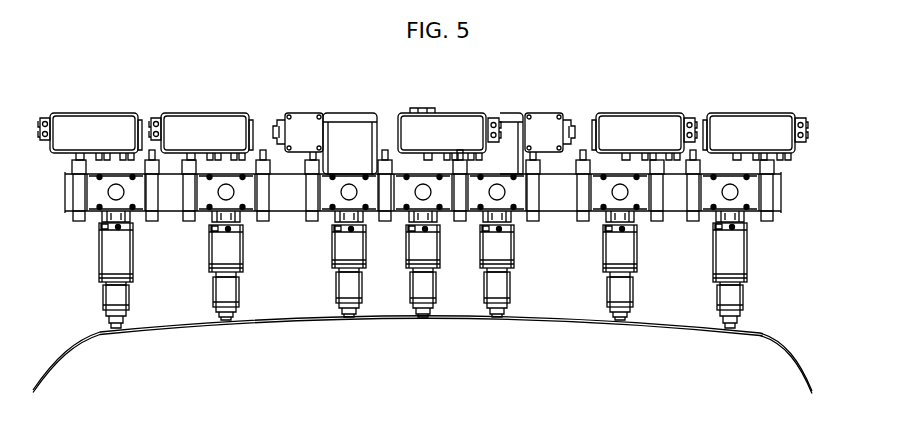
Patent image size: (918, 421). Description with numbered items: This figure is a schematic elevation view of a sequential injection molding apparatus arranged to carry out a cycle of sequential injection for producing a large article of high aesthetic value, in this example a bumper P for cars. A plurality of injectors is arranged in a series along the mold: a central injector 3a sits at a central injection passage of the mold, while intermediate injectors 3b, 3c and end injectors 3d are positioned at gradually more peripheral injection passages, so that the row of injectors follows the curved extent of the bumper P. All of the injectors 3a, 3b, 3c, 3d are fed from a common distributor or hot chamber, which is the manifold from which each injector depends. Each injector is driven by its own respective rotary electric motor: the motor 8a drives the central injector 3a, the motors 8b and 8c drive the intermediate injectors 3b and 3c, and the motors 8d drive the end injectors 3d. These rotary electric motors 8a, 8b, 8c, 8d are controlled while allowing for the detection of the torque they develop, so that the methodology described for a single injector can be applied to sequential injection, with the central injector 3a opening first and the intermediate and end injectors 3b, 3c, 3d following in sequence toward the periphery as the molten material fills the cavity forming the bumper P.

The rotary electric motor 8a is at (448, 128).
The rotary electric motor 8b is at (305, 128).
The rotary electric motor 8c is at (208, 128).
The rotary electric motor 8d is at (100, 129).
The central injector 3a is at (422, 290).
The intermediate injector 3b is at (348, 285).
The intermediate injector 3c is at (227, 292).
The end injector 3d is at (113, 300).
The bumper P is at (782, 345).